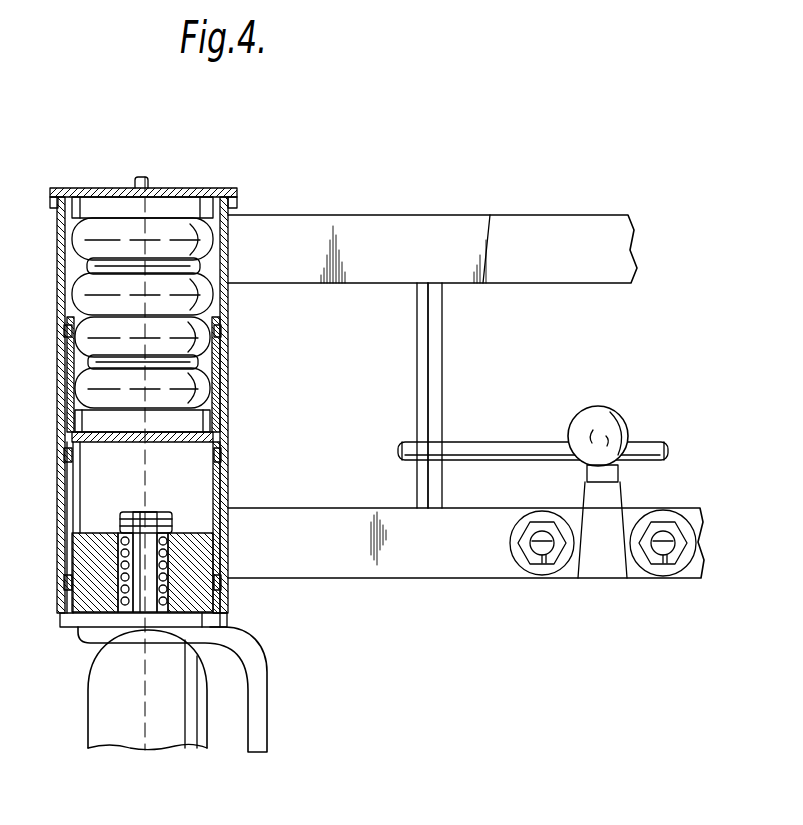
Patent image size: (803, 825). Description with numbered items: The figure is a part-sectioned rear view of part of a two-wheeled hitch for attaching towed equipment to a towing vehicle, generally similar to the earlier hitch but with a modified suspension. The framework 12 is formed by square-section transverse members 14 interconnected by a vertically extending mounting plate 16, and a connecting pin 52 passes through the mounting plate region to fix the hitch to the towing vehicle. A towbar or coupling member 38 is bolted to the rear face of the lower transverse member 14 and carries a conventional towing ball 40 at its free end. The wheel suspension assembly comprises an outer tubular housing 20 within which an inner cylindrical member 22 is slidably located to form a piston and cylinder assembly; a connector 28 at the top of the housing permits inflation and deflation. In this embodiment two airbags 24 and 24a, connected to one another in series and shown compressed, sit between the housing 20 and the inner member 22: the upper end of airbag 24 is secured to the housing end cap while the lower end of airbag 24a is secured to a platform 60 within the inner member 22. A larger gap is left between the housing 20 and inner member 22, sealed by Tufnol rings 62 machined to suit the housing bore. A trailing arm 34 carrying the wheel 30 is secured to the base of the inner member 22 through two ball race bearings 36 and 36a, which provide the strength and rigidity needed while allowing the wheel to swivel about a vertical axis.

The framework 12 is at (446, 377).
The transverse member 14 is at (540, 220).
The mounting plate 16 is at (422, 305).
The outer tubular housing 20 is at (230, 398).
The inner cylindrical member 22 is at (210, 487).
The airbag 24 is at (200, 243).
The airbag 24a is at (222, 342).
The connector 28 is at (150, 182).
The wheel 30 is at (102, 708).
The trailing arm 34 is at (258, 690).
The ball-race bearing 36 is at (198, 598).
The ball race bearing 36a is at (200, 552).
The towbar or coupling member 38 is at (643, 510).
The towing ball 40 is at (607, 413).
The connecting pin 52 is at (527, 440).
The platform 60 is at (222, 441).
The Tufnol ring 62 is at (66, 332).